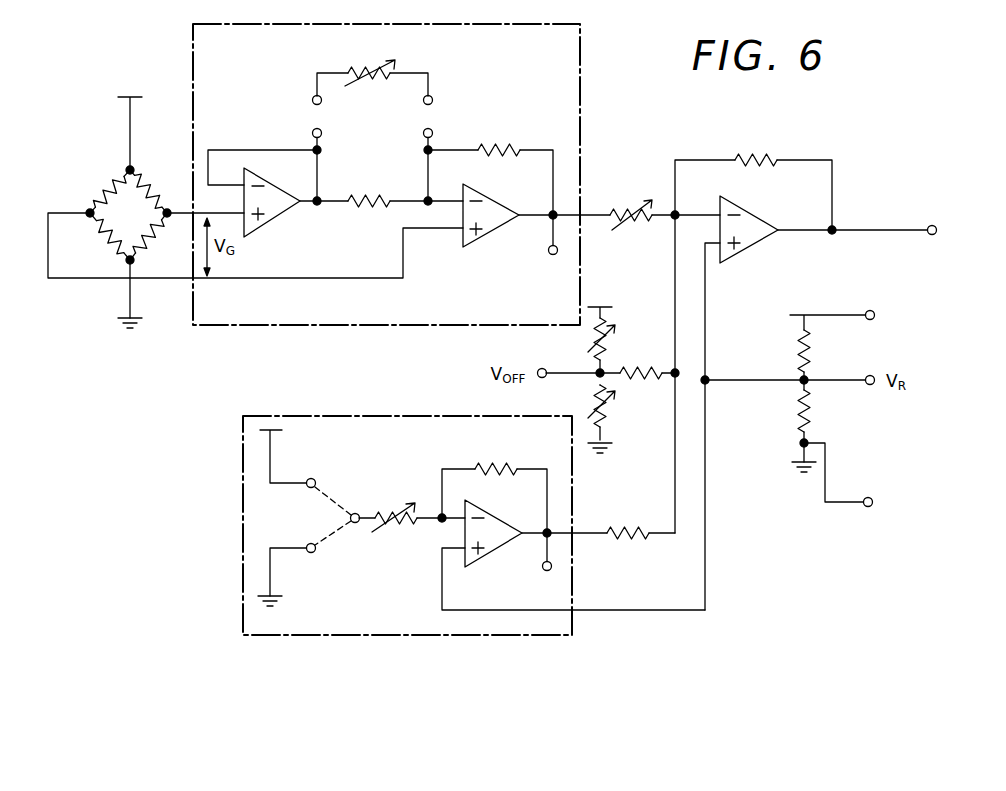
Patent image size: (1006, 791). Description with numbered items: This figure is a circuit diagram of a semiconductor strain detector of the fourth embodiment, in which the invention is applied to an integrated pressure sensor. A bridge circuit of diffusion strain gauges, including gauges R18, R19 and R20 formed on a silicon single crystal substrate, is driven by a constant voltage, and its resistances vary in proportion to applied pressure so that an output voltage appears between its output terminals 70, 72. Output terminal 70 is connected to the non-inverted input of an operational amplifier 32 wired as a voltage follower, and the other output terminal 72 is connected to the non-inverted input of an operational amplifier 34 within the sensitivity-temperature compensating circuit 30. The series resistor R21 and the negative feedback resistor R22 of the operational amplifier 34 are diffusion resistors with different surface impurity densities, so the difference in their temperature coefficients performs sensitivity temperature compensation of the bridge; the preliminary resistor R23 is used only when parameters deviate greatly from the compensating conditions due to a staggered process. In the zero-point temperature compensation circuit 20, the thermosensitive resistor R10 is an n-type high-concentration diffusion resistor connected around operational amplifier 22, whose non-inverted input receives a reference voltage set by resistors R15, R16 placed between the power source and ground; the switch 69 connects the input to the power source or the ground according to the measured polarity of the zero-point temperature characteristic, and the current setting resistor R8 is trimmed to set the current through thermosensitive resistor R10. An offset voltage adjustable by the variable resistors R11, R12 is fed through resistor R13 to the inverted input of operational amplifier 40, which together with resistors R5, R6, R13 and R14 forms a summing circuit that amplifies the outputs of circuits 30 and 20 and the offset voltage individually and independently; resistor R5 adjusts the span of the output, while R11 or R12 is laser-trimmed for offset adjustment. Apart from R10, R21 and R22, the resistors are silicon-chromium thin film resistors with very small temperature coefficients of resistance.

The zero-point temperature compensation circuit 20 is at (410, 415).
The operational amplifier 22 is at (506, 522).
The sensitivity-temperature compensating circuit 30 is at (580, 136).
The operational amplifier 32 is at (270, 221).
The operational amplifier 34 is at (482, 247).
The operational amplifier 40 is at (755, 248).
The switch 69 is at (347, 499).
The output terminal 70 is at (169, 211).
The output terminal 72 is at (84, 210).
The resistor R5 is at (628, 208).
The resistor R6 is at (768, 158).
The current setting resistor R8 is at (404, 515).
The thermosensitive resistor R10 is at (516, 466).
The variable resistor R11 is at (594, 345).
The variable resistor R12 is at (594, 405).
The resistor R13 is at (660, 370).
The resistor R14 is at (645, 532).
The resistor R15 is at (812, 339).
The resistor R16 is at (818, 427).
The diffusion strain gauge R18 is at (108, 186).
The diffusion strain gauge R19 is at (110, 241).
The diffusion strain gauge R20 is at (152, 237).
The series resistor R21 is at (364, 198).
The negative feedback resistor R22 is at (517, 148).
The preliminary resistor R23 is at (360, 67).